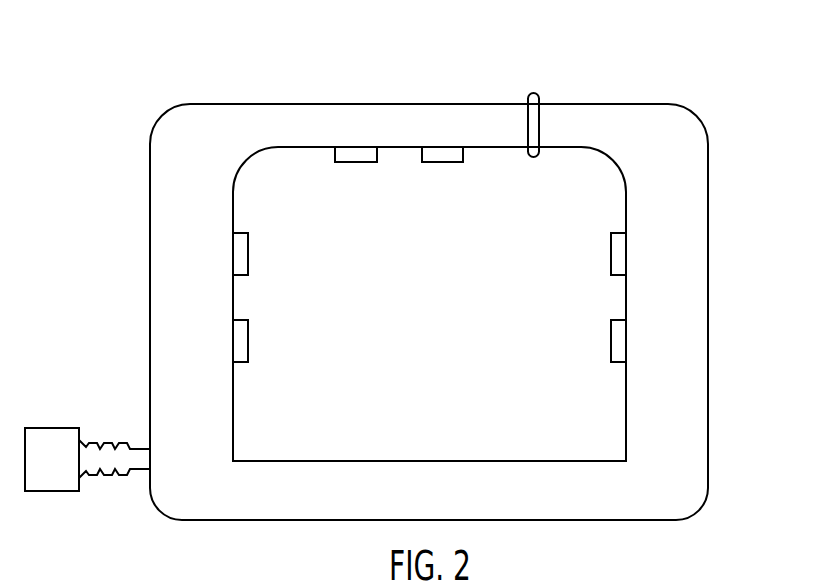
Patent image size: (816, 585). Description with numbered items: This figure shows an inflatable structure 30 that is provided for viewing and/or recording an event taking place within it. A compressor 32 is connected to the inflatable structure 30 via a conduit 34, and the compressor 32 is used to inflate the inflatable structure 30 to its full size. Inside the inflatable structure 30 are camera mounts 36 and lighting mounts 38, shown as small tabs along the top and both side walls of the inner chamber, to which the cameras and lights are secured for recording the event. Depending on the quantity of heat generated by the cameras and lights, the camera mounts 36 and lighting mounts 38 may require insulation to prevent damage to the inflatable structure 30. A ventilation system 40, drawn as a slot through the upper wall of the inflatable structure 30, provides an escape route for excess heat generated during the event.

The inflatable structure 30 is at (302, 86).
The compressor 32 is at (51, 492).
The conduit 34 is at (106, 479).
The camera mounts 36 is at (357, 153).
The lighting mounts 38 is at (443, 153).
The ventilation system 40 is at (534, 93).